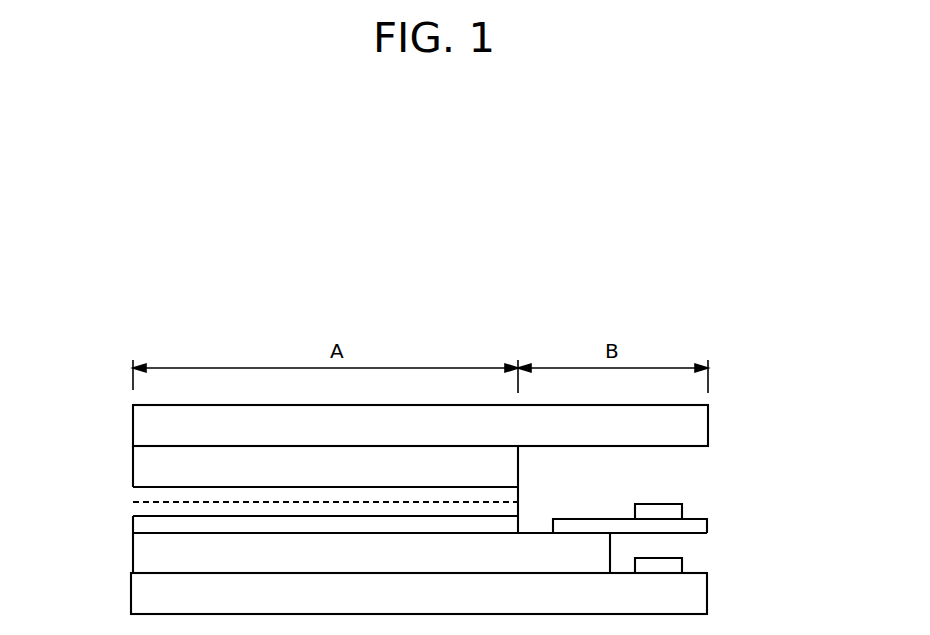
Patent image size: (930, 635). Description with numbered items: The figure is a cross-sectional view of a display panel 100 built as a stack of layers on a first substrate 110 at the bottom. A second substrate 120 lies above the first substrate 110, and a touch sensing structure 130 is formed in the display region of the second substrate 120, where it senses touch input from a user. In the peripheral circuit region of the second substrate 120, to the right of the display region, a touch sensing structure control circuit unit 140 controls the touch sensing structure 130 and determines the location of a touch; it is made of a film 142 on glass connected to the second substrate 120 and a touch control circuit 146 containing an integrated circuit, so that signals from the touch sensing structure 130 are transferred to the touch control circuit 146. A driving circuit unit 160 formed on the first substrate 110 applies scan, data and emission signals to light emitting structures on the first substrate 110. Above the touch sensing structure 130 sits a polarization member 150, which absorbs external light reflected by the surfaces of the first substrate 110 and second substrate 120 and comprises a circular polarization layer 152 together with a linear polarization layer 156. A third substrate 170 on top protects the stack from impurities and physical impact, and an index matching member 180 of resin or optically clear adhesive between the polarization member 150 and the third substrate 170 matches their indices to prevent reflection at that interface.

The display panel 100 is at (263, 292).
The first substrate 110 is at (705, 592).
The second substrate 120 is at (133, 550).
The touch sensing structure 130 is at (133, 523).
The touch sensing structure control circuit unit 140 is at (689, 512).
The film 142 is at (707, 526).
The touch control circuit 146 is at (684, 510).
The polarization member 150 is at (266, 488).
The circular polarization layer 152 is at (133, 508).
The linear polarization layer 156 is at (133, 494).
The driving circuit unit 160 is at (684, 563).
The third substrate 170 is at (133, 427).
The index matching member 180 is at (133, 464).